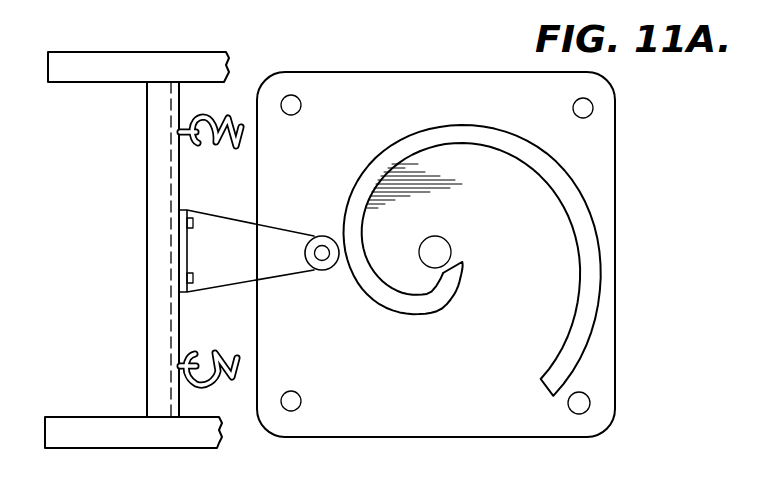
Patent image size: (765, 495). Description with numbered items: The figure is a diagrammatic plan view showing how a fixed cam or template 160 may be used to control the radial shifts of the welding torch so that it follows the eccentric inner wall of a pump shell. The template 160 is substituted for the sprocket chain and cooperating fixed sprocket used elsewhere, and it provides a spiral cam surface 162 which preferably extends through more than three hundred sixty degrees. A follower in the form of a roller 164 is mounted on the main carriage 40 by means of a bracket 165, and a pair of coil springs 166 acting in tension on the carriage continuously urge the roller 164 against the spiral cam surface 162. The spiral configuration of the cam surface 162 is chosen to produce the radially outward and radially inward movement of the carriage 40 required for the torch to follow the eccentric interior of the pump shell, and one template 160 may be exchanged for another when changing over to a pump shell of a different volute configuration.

The main carriage 40 is at (80, 412).
The template 160 is at (603, 154).
The spiral cam surface 162 is at (392, 313).
The roller 164 is at (332, 273).
The bracket 165 is at (221, 229).
The coil springs 166 is at (227, 114).